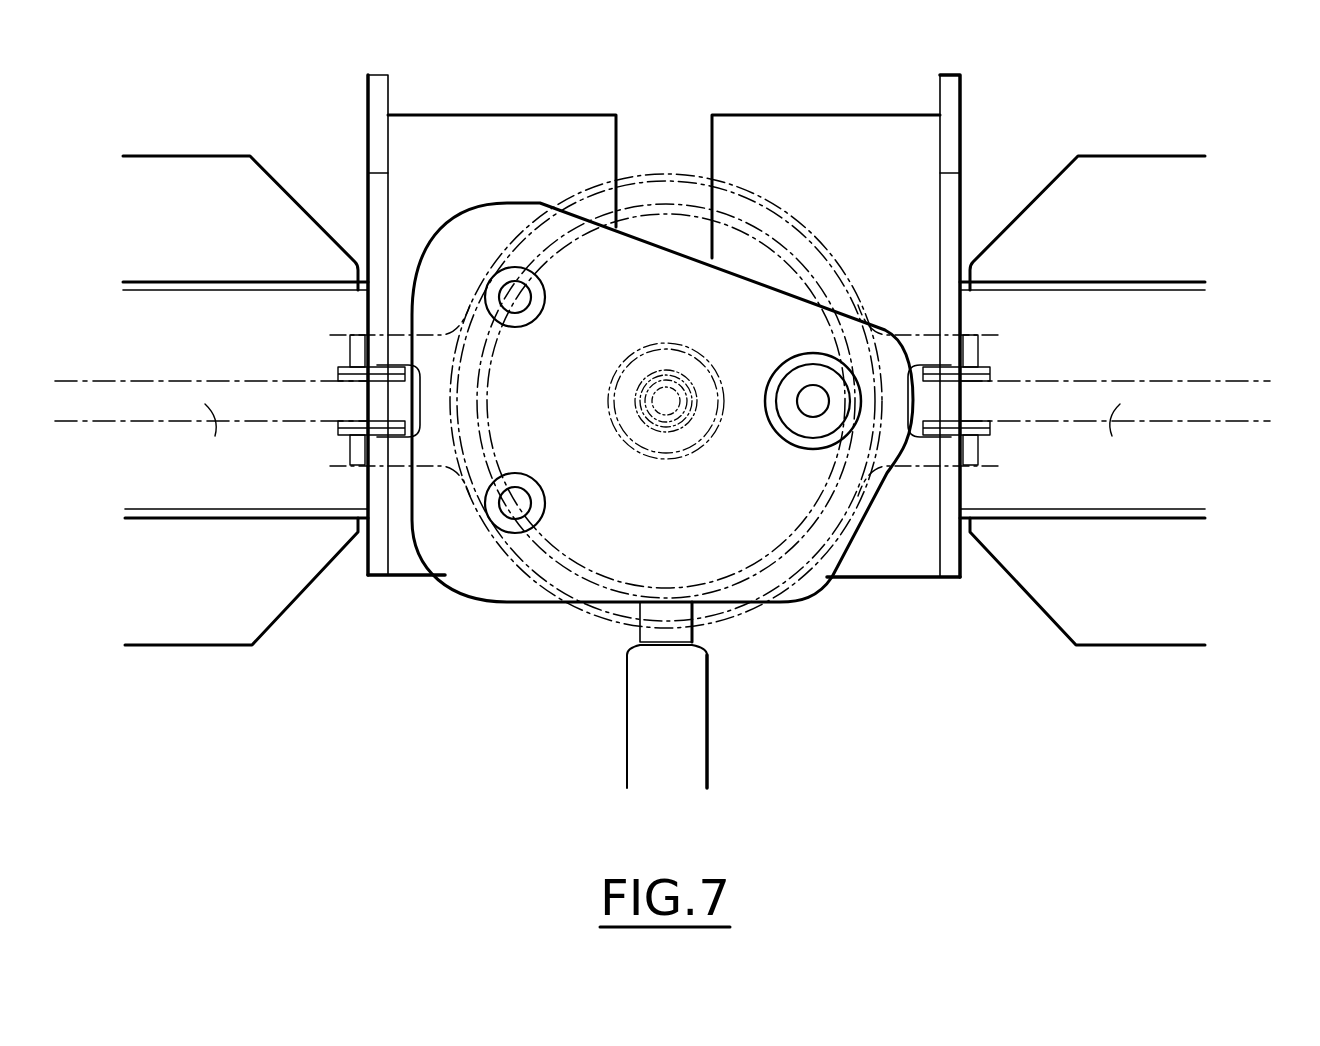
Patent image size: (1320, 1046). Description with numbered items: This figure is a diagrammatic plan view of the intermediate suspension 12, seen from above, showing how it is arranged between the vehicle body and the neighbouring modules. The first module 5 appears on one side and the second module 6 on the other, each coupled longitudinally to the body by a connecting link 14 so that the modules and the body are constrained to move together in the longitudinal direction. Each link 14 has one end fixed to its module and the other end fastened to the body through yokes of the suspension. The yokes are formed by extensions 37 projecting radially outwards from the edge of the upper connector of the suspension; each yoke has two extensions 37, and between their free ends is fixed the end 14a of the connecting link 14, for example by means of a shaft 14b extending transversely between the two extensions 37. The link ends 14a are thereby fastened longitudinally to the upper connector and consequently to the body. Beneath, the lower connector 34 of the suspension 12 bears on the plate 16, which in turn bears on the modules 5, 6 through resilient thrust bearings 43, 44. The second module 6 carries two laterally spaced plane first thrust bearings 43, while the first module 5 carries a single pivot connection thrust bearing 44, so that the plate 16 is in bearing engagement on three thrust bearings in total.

The first module 5 is at (1160, 195).
The second module 6 is at (170, 195).
The intermediate suspension 12 is at (545, 617).
The connecting link 14 is at (110, 380).
The end of connecting link 14a is at (215, 438).
The shaft 14b is at (360, 365).
The plate 16 is at (483, 577).
The lower connector 34 is at (745, 572).
The extension 37 is at (350, 336).
The first thrust bearing 43 is at (508, 288).
The thrust bearing 44 is at (800, 438).